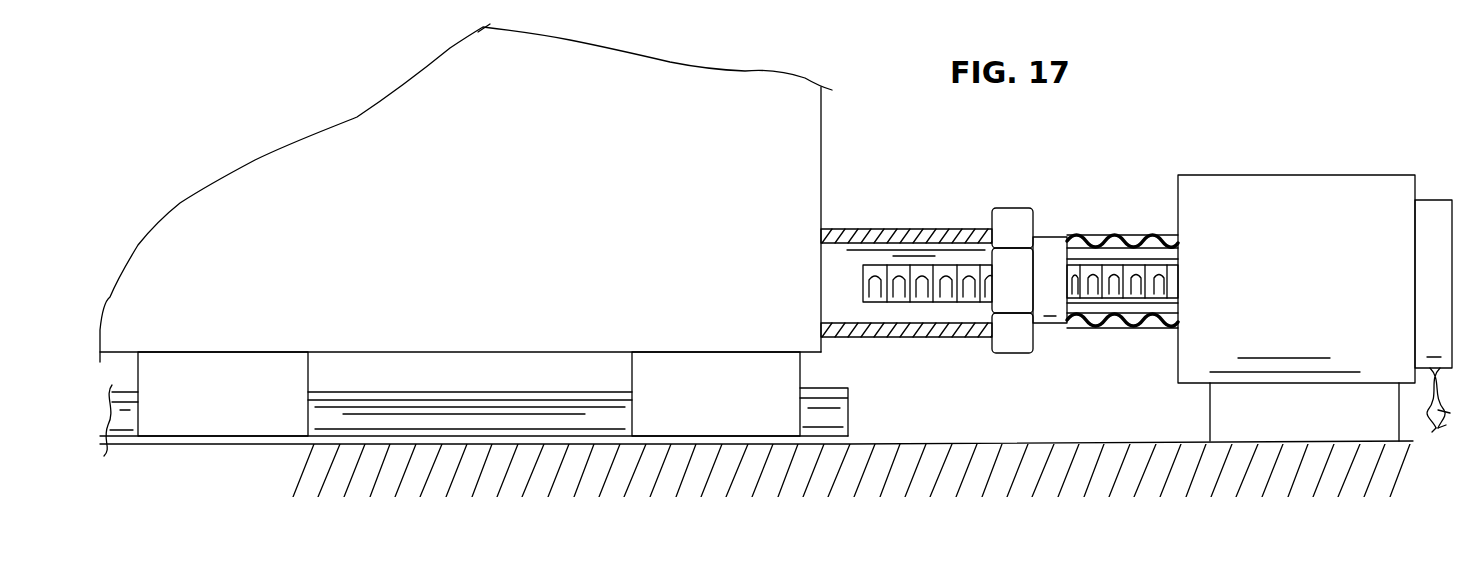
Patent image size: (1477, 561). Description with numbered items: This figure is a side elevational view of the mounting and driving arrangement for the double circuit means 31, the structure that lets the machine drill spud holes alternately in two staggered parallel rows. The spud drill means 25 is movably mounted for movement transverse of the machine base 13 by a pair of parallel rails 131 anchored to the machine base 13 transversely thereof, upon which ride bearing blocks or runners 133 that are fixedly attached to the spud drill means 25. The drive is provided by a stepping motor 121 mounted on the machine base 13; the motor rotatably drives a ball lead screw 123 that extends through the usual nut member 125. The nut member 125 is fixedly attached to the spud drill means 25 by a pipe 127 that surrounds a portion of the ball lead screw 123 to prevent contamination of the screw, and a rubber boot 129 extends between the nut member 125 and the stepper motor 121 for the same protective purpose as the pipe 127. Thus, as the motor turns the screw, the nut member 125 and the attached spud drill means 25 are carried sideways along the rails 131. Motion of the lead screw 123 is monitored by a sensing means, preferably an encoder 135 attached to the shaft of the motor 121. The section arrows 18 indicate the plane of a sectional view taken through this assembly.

The machine base 13 is at (948, 452).
The section line 18- 18 is at (207, 352).
The spud drill means 25 is at (824, 192).
The double circuit means 31 is at (1258, 147).
The stepping motor 121 is at (1293, 196).
The ball lead screw 123 is at (1108, 268).
The nut member 125 is at (1023, 346).
The pipe 127 is at (902, 332).
The rubber boot 129 is at (1118, 320).
The parallel rails 131 is at (519, 397).
The bearing blocks or runners 133 is at (286, 368).
The encoder 135 is at (1428, 208).